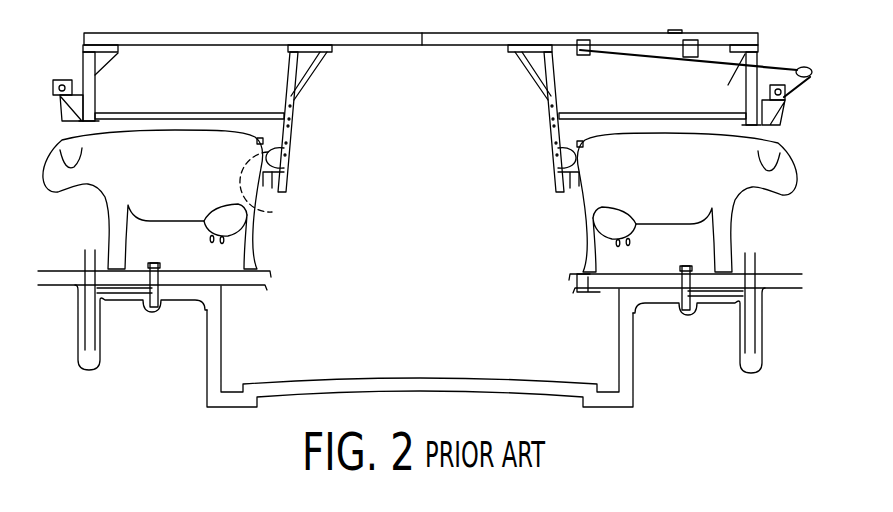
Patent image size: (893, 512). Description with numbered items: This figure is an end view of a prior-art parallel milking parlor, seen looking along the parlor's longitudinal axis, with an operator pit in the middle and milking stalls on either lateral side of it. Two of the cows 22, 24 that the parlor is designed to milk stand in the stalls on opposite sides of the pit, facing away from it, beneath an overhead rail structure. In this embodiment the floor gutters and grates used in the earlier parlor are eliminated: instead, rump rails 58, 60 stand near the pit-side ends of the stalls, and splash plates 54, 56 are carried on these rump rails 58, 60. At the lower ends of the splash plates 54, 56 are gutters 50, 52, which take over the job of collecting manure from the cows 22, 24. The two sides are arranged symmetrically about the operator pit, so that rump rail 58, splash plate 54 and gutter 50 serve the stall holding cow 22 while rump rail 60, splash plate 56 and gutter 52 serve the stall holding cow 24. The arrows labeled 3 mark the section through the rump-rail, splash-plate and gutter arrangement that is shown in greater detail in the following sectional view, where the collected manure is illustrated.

The cow 22 is at (685, 191).
The cow 24 is at (192, 182).
The gutter 50 is at (580, 186).
The gutter 52 is at (268, 188).
The splash plate 54 is at (557, 144).
The splash plate 56 is at (285, 149).
The rump rail 58 is at (555, 186).
The rump rail 60 is at (285, 188).
The section line for FIG. 3 is at (278, 215).